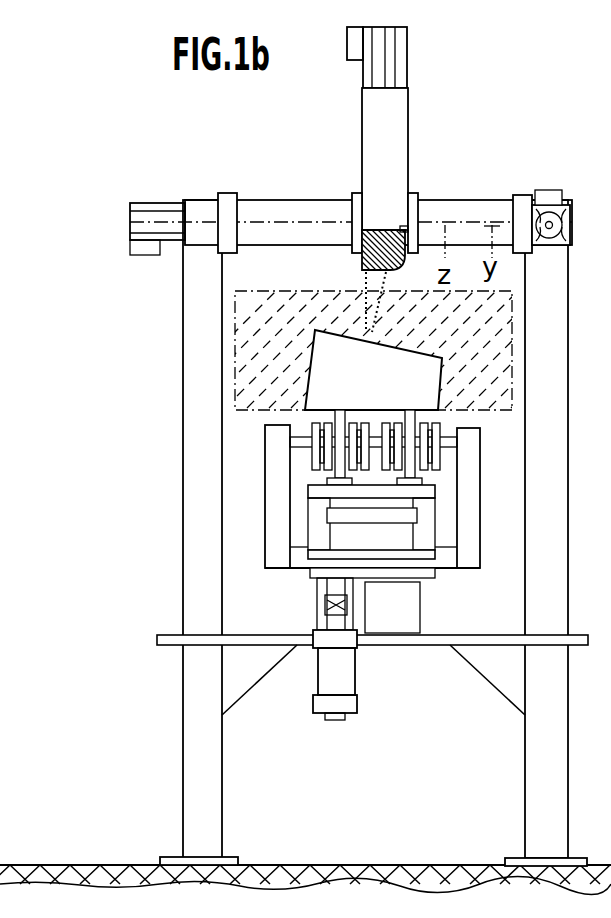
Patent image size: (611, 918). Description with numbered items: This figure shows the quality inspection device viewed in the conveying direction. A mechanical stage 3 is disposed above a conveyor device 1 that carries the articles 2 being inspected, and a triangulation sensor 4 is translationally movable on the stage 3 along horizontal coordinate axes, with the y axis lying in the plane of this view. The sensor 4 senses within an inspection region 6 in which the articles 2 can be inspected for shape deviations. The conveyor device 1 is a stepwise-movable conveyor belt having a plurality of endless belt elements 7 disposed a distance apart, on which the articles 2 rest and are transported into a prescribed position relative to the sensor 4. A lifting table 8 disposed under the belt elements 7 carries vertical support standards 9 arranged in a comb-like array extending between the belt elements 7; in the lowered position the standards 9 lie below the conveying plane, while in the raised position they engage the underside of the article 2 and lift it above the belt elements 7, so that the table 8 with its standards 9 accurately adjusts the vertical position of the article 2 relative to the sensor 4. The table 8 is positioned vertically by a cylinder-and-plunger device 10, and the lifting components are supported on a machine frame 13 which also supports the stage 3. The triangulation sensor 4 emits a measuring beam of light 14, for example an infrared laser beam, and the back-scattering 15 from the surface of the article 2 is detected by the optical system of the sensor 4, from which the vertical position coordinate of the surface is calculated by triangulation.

The conveyor device 1 is at (273, 463).
The article 2 is at (320, 335).
The mechanical stage 3 is at (276, 207).
The triangulation sensor 4 is at (395, 245).
The inspection region 6 is at (262, 367).
The belt element 7 is at (440, 418).
The lifting table 8 is at (318, 495).
The vertical support standard 9 is at (312, 427).
The cylinder-and-plunger device 10 is at (340, 672).
The machine frame 13 is at (207, 745).
The measuring beam of light 14 is at (363, 283).
The back-scattering 15 is at (393, 285).